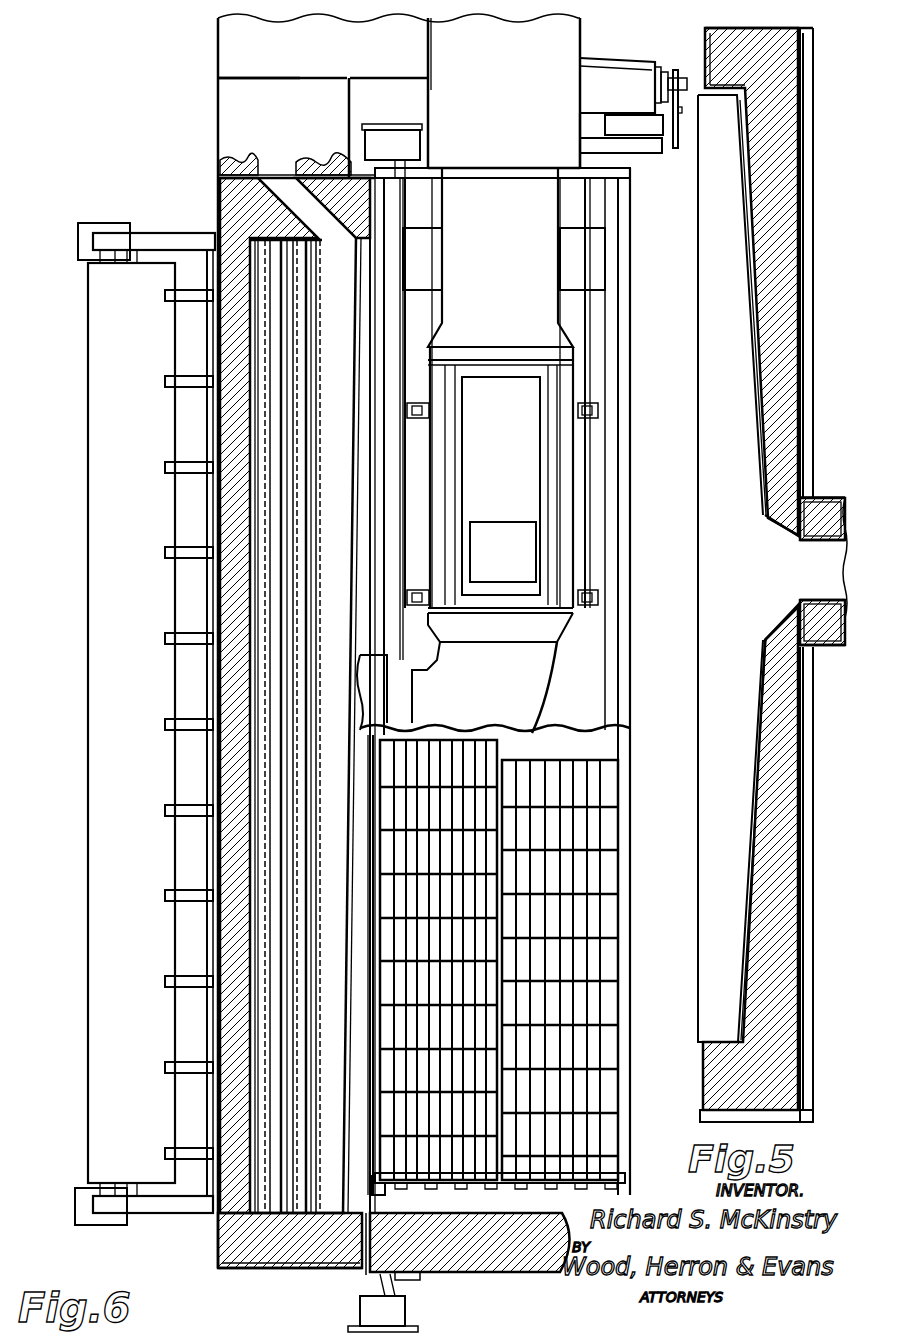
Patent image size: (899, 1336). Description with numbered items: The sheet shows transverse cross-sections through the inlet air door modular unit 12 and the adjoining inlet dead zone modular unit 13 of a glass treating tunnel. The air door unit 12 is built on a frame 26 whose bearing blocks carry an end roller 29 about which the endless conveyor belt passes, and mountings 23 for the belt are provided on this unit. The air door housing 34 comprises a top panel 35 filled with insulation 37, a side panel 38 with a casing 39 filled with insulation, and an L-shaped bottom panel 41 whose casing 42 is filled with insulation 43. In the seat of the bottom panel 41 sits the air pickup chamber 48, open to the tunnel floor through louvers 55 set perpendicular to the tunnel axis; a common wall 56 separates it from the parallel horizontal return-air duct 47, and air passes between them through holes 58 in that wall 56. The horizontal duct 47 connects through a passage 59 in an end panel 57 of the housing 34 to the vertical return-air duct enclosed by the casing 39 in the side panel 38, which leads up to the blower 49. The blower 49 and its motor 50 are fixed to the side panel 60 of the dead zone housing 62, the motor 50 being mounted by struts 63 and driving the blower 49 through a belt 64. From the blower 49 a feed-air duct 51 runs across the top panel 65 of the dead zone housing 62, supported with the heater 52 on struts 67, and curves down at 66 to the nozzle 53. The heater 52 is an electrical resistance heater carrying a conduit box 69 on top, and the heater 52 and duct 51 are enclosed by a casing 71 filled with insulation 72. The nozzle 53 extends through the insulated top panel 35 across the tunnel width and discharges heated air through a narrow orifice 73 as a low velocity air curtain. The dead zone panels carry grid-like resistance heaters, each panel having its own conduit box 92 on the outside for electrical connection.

In FIG. 6, the inlet air door modular unit 12 is at (287, 1285).
In FIG. 6, the inlet dead zone modular unit 13 is at (490, 1288).
In FIG. 6, the mountings 23 is at (72, 1167).
In FIG. 6, the frame 26 is at (205, 243).
In FIG. 6, the end roller 29 is at (100, 862).
In FIG. 6, the air door housing 34 is at (213, 178).
In FIG. 5, the top panel 35 is at (784, 142).
In FIG. 5, the insulation 37 is at (782, 257).
In FIG. 6, the side panel 38 is at (243, 82).
In FIG. 6, the casing 39 is at (399, 96).
In FIG. 6, the bottom panel 41 is at (237, 1272).
In FIG. 6, the casing 42 is at (300, 1270).
In FIG. 6, the insulation 43 is at (245, 1250).
In FIG. 6, the horizontal return-air duct 47 is at (309, 726).
In FIG. 6, the air pickup chamber 48 is at (288, 366).
In FIG. 6, the blower 49 is at (504, 93).
In FIG. 6, the motor 50 is at (636, 120).
In FIG. 6, the feed-air duct 51 is at (542, 660).
In FIG. 5, the feed-air duct 51 is at (840, 496).
In FIG. 6, the heater 52 is at (495, 390).
In FIG. 5, the nozzle 53 is at (712, 586).
In FIG. 6, the louvers 55 is at (270, 434).
In FIG. 6, the common wall 56 is at (318, 452).
In FIG. 6, the end panel 57 is at (232, 190).
In FIG. 6, the holes 58 is at (330, 484).
In FIG. 6, the passage 59 is at (288, 174).
In FIG. 6, the side panel 60 is at (622, 176).
In FIG. 6, the dead zone housing 62 is at (632, 222).
In FIG. 6, the struts 63 is at (594, 144).
In FIG. 6, the belt 64 is at (692, 58).
In FIG. 6, the top panel 65 is at (587, 478).
In FIG. 6, the curved portion 66 is at (380, 706).
In FIG. 6, the struts 67 is at (592, 588).
In FIG. 6, the conduit box 69 is at (503, 552).
In FIG. 5, the casing 71 is at (835, 647).
In FIG. 5, the insulation 72 is at (838, 638).
In FIG. 5, the orifice 73 is at (698, 622).
In FIG. 6, the conduit box 92 is at (395, 140).